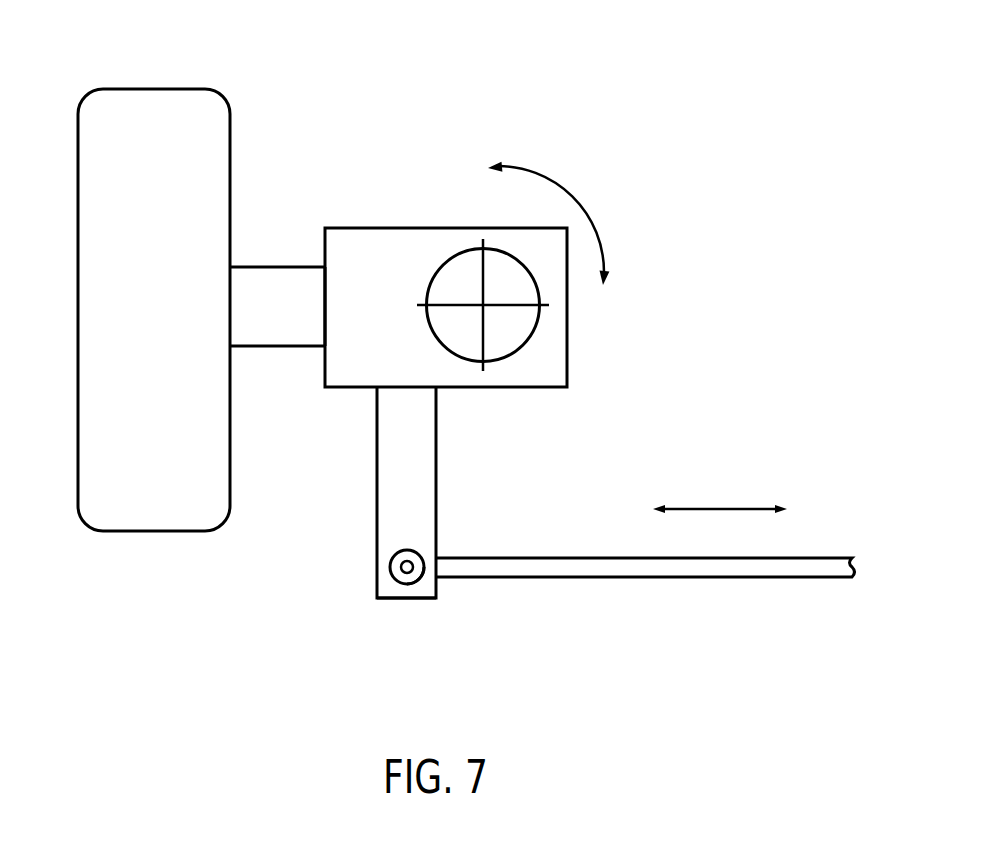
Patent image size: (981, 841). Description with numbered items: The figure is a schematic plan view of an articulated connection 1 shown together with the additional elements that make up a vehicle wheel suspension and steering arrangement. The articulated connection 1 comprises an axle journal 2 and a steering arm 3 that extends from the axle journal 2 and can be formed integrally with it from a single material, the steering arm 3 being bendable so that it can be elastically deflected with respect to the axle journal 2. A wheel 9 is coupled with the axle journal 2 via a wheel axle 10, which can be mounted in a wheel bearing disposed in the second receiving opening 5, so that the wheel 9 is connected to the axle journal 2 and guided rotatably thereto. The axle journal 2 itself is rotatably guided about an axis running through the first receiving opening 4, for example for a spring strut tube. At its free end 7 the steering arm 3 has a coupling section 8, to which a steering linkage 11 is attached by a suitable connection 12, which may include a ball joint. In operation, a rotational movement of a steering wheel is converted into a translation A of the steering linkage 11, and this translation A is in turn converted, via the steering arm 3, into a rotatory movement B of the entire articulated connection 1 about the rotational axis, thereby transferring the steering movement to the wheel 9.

The articulated connection 1 is at (562, 92).
The axle journal 2 is at (397, 225).
The steering arm 3 is at (437, 460).
The first receiving opening 4 is at (524, 323).
The second receiving opening 5 is at (318, 260).
The free end 7 is at (404, 630).
The coupling section 8 is at (420, 592).
The wheel 9 is at (78, 290).
The wheel axle 10 is at (287, 337).
The steering linkage 11 is at (628, 568).
The connection 12 is at (398, 570).
The translation A is at (715, 509).
The rotatory movement B is at (588, 218).